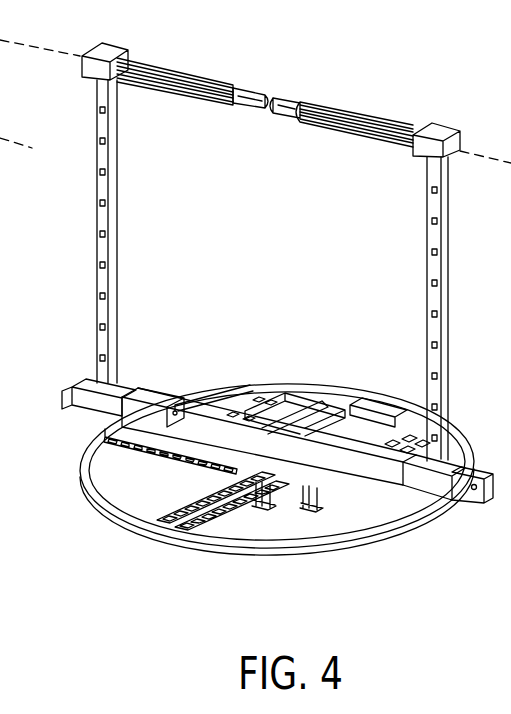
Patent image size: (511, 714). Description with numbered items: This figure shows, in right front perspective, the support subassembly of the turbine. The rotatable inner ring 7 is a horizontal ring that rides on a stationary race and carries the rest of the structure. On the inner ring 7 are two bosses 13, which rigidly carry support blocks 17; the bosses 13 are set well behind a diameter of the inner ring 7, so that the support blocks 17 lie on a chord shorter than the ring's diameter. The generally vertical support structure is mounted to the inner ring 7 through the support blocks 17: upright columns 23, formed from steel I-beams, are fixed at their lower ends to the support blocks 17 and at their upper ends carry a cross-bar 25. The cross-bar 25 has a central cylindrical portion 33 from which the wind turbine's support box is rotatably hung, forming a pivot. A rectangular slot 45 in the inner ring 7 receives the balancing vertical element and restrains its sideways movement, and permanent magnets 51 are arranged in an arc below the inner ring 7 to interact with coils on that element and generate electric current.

The rotatable inner ring 7 is at (130, 515).
The boss 13 is at (163, 404).
The support block 17 is at (93, 381).
The upright column 23 is at (100, 184).
The cross-bar 25 is at (350, 111).
The central cylindrical portion 33 is at (293, 103).
The rectangular slot 45 is at (330, 422).
The permanent magnets 51 is at (267, 505).